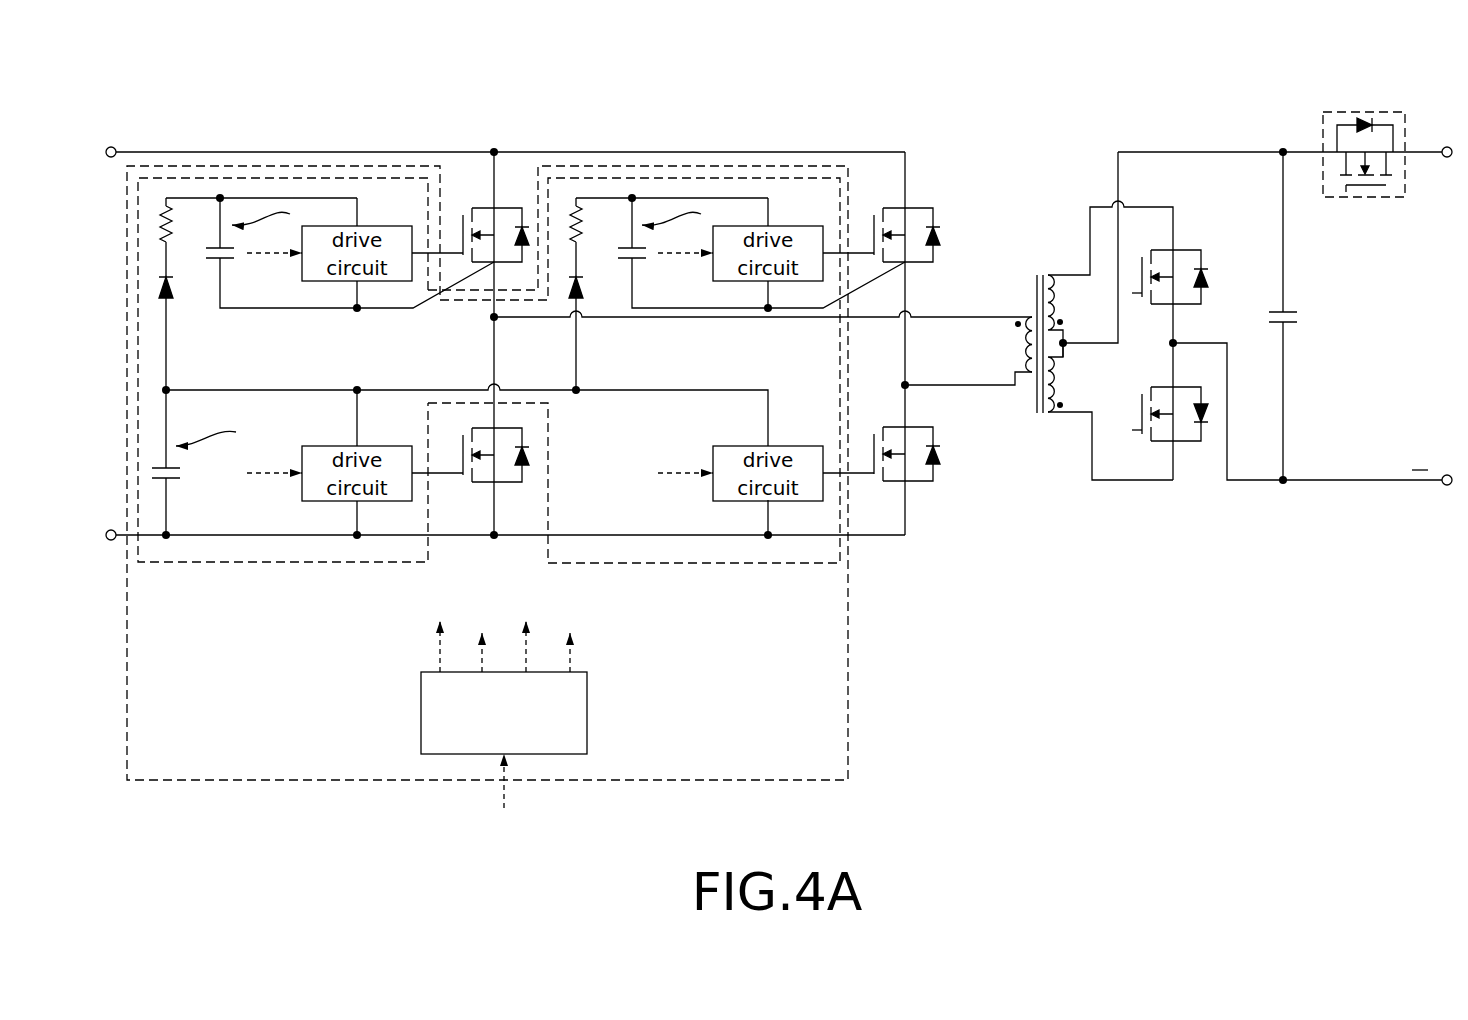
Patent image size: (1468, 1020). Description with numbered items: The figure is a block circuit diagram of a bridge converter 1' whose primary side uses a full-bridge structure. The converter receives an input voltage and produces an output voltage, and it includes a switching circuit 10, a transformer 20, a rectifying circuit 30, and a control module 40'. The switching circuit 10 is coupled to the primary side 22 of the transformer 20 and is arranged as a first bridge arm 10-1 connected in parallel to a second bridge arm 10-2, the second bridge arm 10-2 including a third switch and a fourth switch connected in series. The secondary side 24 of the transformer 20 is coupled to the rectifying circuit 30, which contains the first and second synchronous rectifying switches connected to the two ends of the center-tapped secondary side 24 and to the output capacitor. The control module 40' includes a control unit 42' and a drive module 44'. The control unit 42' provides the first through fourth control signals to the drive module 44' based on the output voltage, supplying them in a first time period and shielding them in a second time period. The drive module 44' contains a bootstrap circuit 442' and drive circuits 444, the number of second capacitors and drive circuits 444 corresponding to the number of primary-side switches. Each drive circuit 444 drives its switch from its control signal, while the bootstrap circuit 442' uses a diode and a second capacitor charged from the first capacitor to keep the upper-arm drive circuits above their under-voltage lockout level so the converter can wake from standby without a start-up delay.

The bridge converter 1' is at (775, 428).
The switching circuit 10 is at (543, 73).
The first bridge arm 10-1 is at (387, 140).
The second bridge arm 10-2 is at (603, 140).
The transformer 20 is at (1040, 270).
The primary side 22 is at (1017, 394).
The secondary side 24 is at (1058, 420).
The rectifying circuit 30 is at (1228, 140).
The control module 40' is at (535, 501).
The control unit 42' is at (552, 713).
The drive module 44' is at (283, 388).
The bootstrap circuit 442' is at (532, 292).
The drive circuit 444 is at (370, 226).